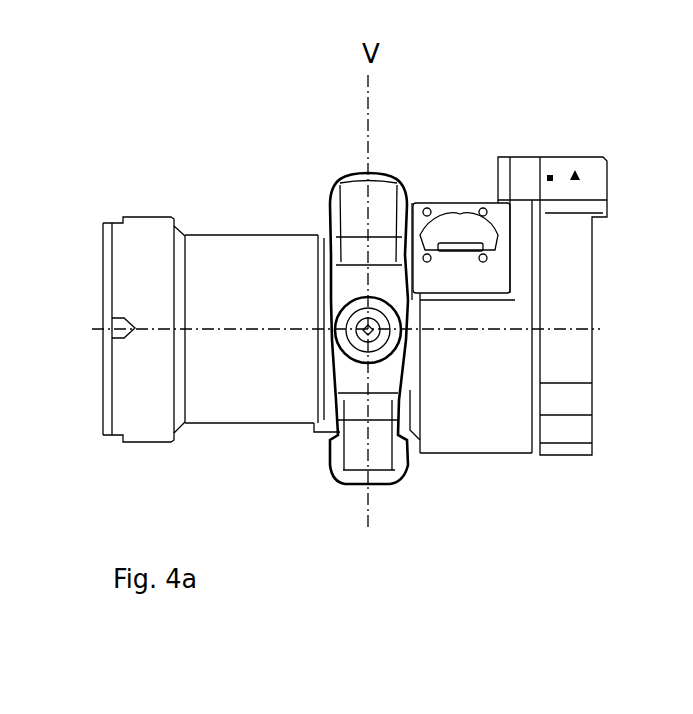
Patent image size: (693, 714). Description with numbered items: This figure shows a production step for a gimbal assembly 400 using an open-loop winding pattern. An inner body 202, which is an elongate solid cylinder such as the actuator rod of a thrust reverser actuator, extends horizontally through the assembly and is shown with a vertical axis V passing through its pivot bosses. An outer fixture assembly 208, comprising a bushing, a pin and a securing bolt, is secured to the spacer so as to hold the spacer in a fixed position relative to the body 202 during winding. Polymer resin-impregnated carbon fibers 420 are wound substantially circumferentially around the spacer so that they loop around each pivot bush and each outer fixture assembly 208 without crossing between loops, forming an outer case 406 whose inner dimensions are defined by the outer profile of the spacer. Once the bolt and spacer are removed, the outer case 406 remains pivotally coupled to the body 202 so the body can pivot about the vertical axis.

The gimbal assembly 400 is at (500, 110).
The inner body 202 is at (249, 250).
The outer case 406 is at (374, 205).
The outer fixture assembly 208 is at (368, 330).
The polymer resin-impregnated carbon fibers 420 is at (407, 320).